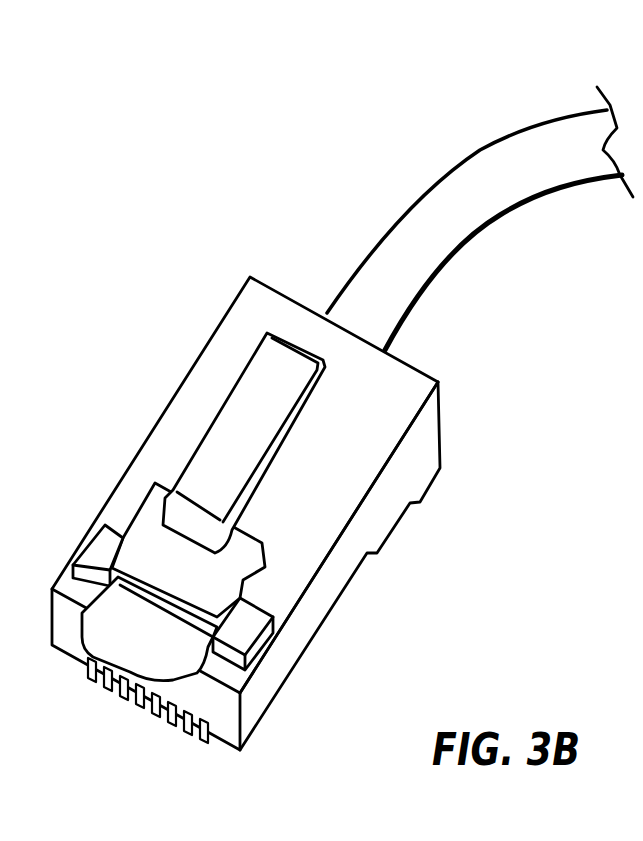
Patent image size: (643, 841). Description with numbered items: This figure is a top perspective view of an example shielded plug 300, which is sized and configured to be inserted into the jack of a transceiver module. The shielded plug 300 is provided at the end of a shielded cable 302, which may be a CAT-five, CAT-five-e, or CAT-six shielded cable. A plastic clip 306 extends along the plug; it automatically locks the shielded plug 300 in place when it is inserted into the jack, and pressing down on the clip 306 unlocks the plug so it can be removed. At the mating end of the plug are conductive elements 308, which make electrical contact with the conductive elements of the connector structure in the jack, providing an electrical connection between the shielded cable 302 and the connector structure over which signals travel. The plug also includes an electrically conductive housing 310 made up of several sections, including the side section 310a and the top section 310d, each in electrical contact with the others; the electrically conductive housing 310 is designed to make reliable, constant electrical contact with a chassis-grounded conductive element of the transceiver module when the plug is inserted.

The shielded plug 300 is at (293, 222).
The shielded cable 302 is at (513, 180).
The plastic clip 306 is at (273, 398).
The conductive elements 308 is at (227, 732).
The electrically conductive housing 310 is at (128, 453).
The side section 310a is at (380, 530).
The top section 310d is at (367, 447).